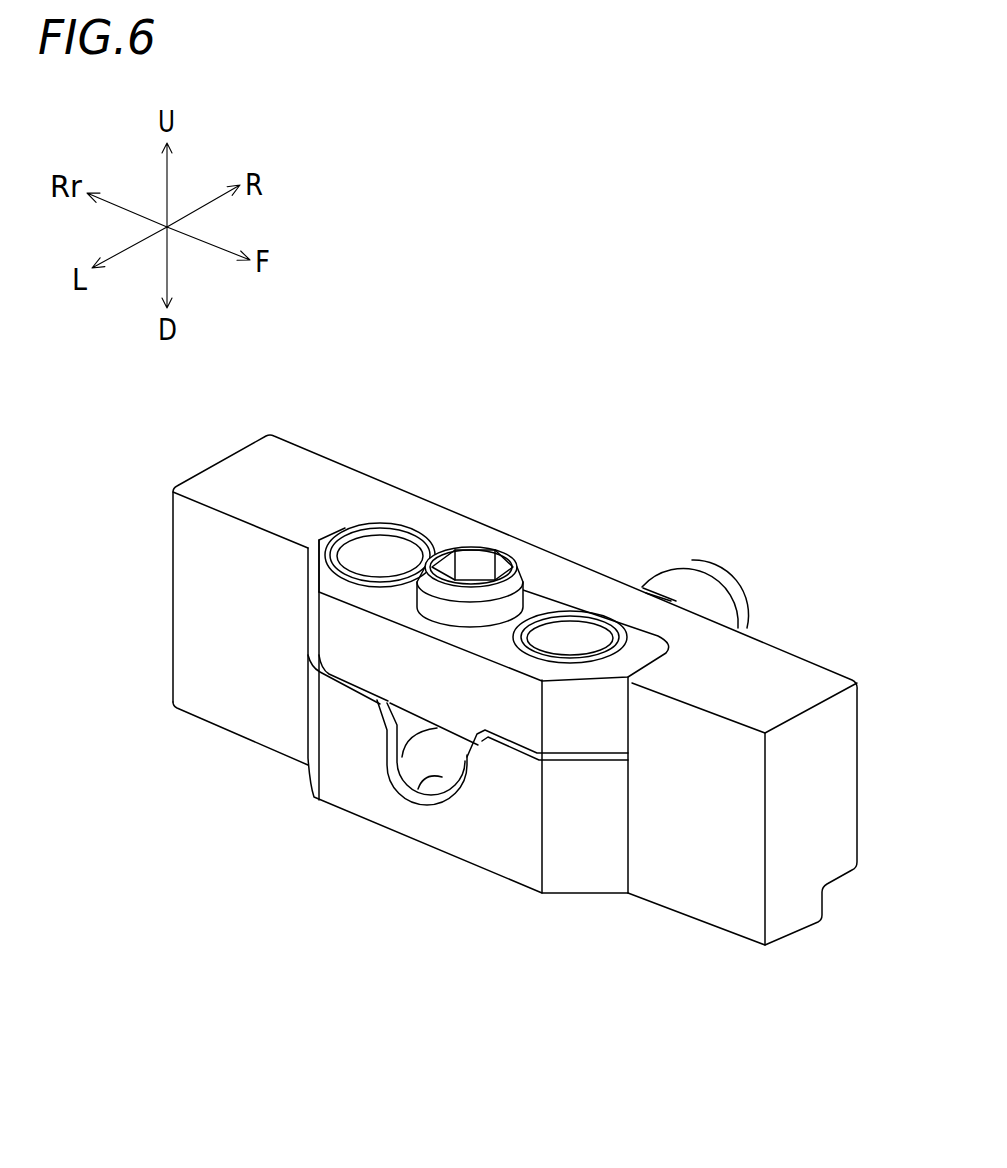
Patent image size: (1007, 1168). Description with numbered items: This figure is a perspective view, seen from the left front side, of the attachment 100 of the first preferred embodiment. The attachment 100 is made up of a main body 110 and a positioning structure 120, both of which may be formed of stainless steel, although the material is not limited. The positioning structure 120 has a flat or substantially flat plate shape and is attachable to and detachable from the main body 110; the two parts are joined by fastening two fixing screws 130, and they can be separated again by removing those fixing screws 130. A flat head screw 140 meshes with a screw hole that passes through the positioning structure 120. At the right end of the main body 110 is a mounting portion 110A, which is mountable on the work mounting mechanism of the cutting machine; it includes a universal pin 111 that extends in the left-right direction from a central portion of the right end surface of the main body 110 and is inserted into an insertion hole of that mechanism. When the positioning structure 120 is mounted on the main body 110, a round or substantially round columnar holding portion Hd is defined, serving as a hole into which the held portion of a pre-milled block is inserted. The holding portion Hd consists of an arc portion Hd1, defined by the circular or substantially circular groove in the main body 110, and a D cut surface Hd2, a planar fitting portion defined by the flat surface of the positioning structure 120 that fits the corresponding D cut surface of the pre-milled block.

The attachment 100 is at (638, 320).
The main body 110 is at (340, 492).
The mounting portion 110A is at (770, 479).
The universal pin 111 is at (675, 580).
The positioning structure 120 is at (542, 606).
The fixing screw 130 is at (394, 566).
The flat head screw 140 is at (472, 548).
The holding portion Hd is at (376, 815).
The arc portion Hd1 is at (417, 792).
The D cut surface Hd2 is at (393, 770).